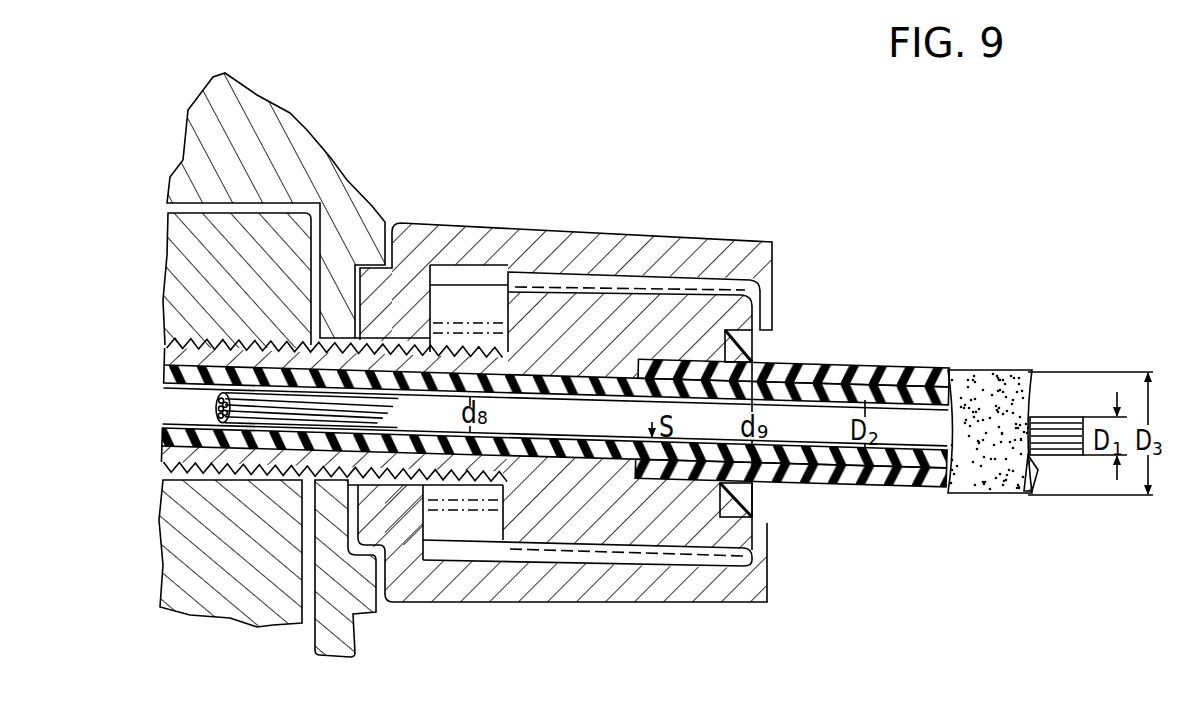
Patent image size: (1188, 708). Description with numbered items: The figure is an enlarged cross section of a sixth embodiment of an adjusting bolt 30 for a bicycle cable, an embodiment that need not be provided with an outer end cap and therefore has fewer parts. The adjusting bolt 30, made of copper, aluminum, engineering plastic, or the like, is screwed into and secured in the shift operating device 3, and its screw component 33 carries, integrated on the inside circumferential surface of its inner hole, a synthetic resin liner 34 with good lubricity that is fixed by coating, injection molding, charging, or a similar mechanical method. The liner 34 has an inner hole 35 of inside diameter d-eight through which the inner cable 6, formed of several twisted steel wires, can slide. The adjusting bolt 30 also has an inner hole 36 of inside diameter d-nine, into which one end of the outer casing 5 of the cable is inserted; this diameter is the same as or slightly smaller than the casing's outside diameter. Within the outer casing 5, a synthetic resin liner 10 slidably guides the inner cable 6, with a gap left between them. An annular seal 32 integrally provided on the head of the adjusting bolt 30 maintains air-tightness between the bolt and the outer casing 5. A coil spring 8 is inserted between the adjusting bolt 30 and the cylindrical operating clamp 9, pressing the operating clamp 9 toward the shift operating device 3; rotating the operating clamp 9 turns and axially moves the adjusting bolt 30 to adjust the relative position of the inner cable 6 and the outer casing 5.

The shift operating device 3 is at (307, 137).
The screw component 33 is at (268, 348).
The coil spring 8 is at (472, 327).
The operating clamp 9 is at (608, 248).
The inner hole of the liner 35 is at (165, 393).
The liner 34 is at (165, 423).
The adjusting bolt 30 is at (168, 458).
The annular seal 32 is at (748, 343).
The inner hole of the adjusting bolt 36 is at (670, 478).
The outer casing 5 is at (969, 367).
The inner cable 6 is at (1062, 431).
The liner 10 is at (925, 457).